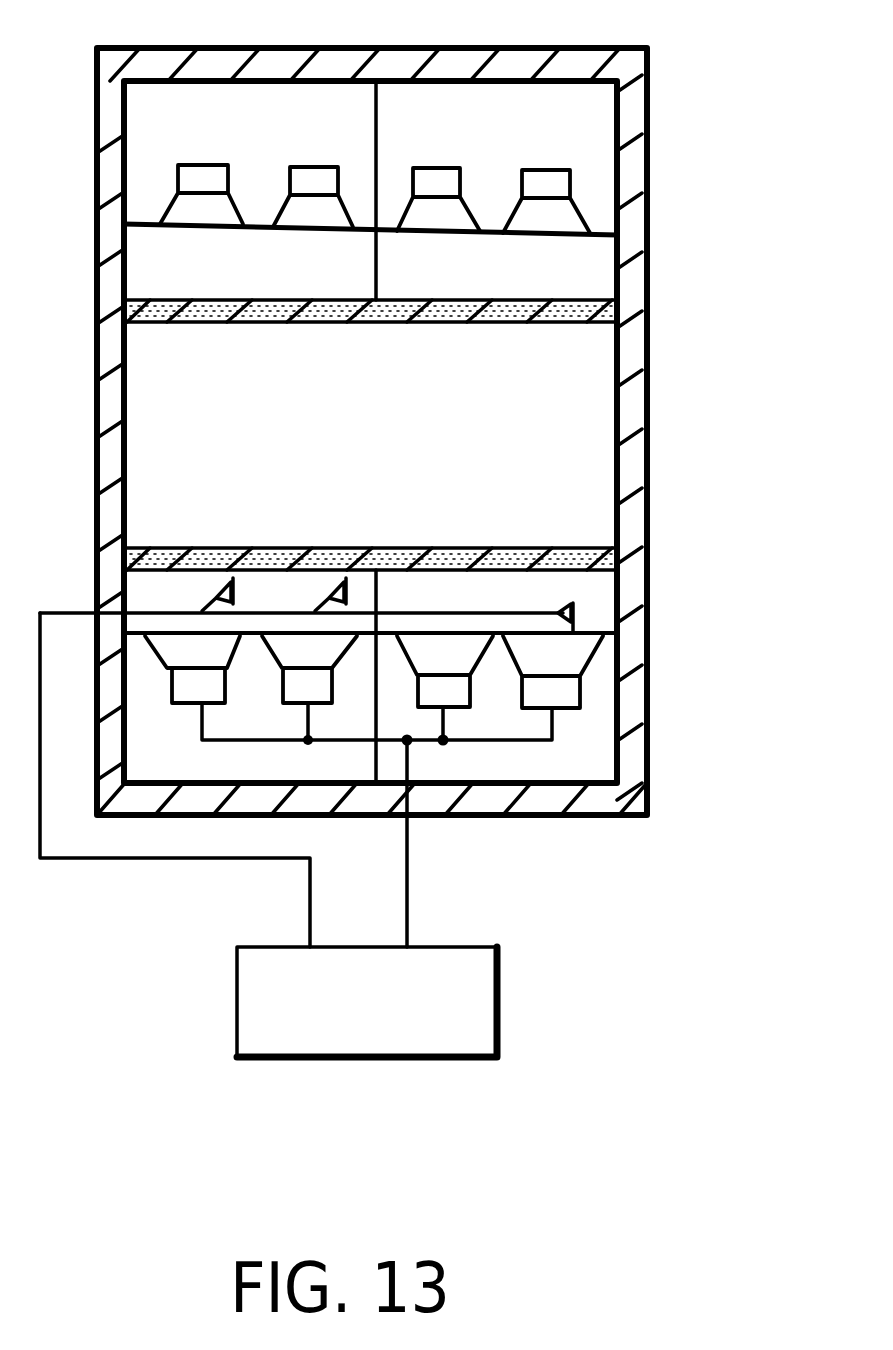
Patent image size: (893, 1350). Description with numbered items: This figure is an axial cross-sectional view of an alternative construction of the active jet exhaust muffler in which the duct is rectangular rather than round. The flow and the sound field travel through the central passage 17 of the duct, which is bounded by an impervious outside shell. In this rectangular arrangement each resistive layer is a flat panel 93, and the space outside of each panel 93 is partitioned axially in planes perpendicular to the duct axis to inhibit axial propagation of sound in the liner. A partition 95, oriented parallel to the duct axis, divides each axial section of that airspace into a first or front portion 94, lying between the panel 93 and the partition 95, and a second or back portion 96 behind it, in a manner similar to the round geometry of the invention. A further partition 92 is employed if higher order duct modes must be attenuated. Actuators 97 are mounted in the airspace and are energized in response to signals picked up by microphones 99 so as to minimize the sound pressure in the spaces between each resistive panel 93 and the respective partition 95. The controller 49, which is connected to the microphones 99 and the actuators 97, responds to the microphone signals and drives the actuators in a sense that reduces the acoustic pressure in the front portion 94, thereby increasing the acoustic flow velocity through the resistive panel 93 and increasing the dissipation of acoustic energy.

The passage 17 is at (201, 496).
The partition 92 is at (377, 108).
The flat panel 93 is at (253, 322).
The front portion 94 is at (482, 285).
The partition 95 is at (152, 230).
The back portion 96 is at (548, 144).
The actuator 97 is at (292, 178).
The microphone 99 is at (455, 613).
The controller 49 is at (268, 835).